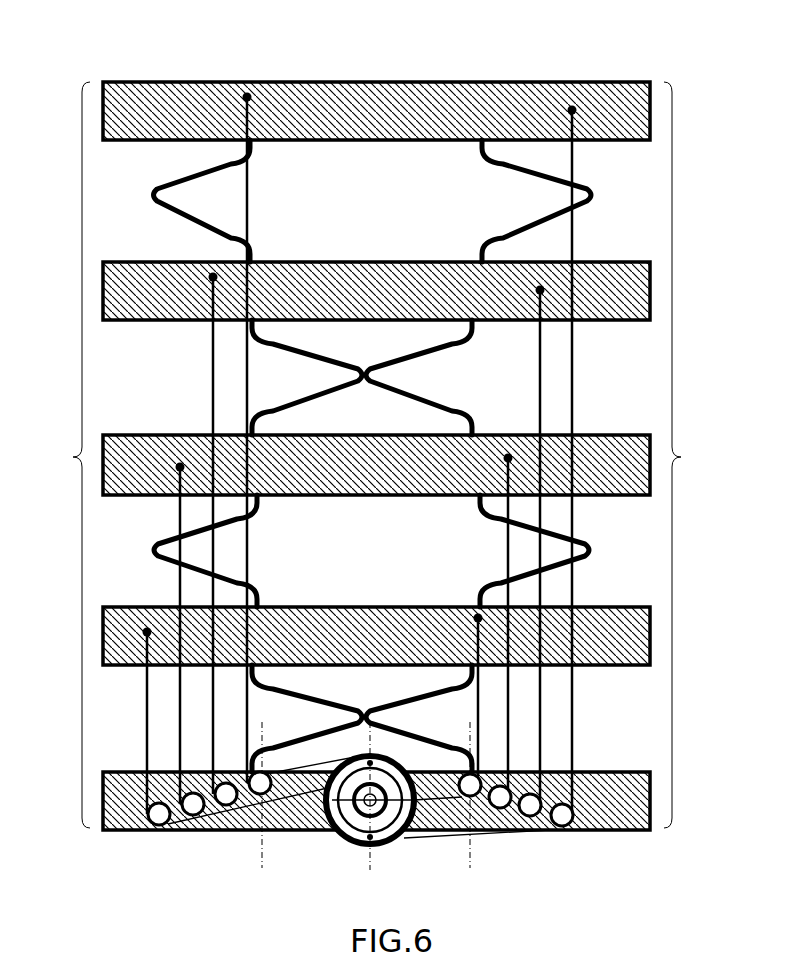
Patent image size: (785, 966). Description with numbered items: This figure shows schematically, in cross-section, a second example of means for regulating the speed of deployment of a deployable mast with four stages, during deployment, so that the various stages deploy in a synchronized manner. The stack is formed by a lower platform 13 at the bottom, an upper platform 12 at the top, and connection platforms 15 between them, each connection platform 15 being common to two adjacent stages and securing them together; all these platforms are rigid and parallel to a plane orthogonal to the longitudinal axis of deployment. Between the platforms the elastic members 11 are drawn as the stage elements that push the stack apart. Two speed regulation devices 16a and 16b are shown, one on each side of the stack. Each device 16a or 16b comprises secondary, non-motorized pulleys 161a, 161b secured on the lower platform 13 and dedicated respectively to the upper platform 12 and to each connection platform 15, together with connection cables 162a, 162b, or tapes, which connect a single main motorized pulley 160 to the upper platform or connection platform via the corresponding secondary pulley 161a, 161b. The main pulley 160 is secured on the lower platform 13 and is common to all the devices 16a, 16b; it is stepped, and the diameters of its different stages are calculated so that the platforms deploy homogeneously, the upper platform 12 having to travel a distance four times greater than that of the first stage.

The elastic member (spring) 11 is at (182, 177).
The upper platform 12 is at (384, 82).
The lower platform 13 is at (600, 771).
The connection platform 15 is at (598, 318).
The speed regulation device 16a is at (59, 455).
The speed regulation device 16b is at (695, 455).
The main motorized pulley 160 is at (333, 850).
The secondary pulley 161a is at (238, 834).
The secondary pulley 161b is at (563, 832).
The connection cable 162a is at (147, 690).
The connection cable 162b is at (545, 343).